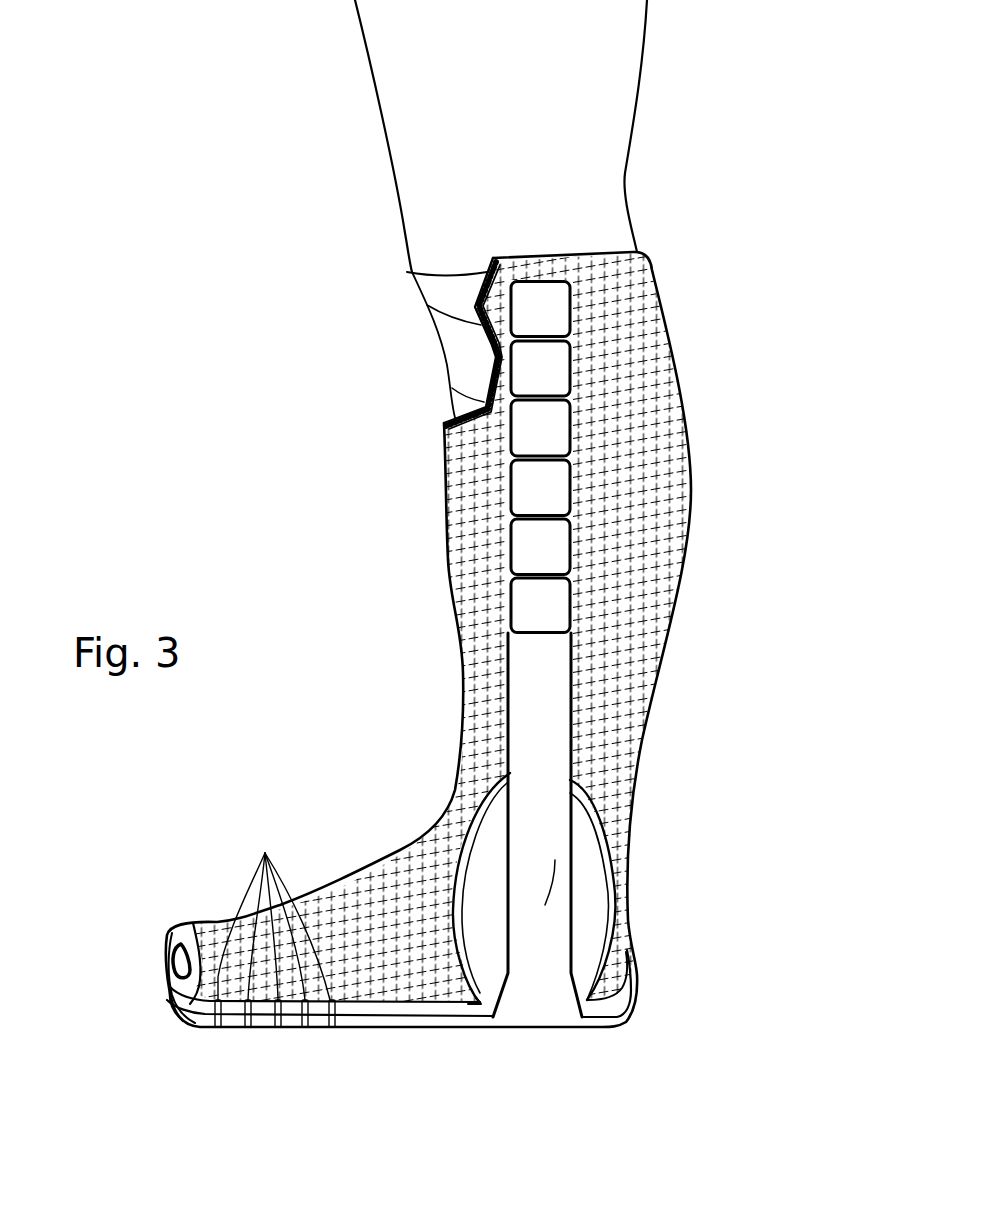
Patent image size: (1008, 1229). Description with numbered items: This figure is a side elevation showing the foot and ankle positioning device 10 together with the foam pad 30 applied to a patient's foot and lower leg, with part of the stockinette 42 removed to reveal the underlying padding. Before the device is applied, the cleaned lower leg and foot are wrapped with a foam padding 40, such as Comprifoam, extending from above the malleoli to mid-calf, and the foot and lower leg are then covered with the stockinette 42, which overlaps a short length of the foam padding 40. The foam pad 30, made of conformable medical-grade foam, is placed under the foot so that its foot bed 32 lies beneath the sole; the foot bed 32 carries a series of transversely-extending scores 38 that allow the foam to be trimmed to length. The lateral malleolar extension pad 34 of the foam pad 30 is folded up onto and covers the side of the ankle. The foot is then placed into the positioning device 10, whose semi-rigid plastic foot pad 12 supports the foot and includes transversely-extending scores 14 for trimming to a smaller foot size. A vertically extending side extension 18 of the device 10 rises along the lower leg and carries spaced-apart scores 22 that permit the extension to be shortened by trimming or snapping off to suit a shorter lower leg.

The foot and ankle positioning device 10 is at (434, 565).
The foot pad 12 is at (435, 1023).
The transversely-extending scores 14 is at (218, 1027).
The side extension 18 is at (553, 738).
The spaced-apart scores 22 is at (572, 517).
The foam pad 30 is at (140, 953).
The foot bed 32 is at (168, 990).
The lateral malleolar extension pad 34 is at (598, 920).
The transversely-extending scores 38 is at (265, 853).
The foam padding 40 is at (467, 355).
The stockinette 42 is at (660, 530).